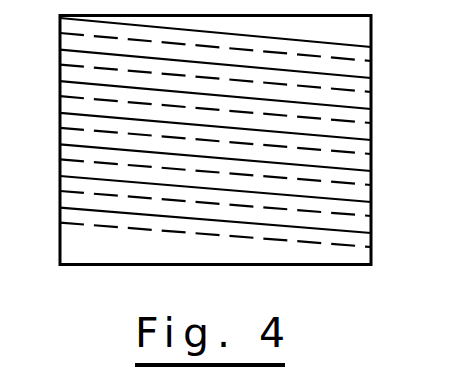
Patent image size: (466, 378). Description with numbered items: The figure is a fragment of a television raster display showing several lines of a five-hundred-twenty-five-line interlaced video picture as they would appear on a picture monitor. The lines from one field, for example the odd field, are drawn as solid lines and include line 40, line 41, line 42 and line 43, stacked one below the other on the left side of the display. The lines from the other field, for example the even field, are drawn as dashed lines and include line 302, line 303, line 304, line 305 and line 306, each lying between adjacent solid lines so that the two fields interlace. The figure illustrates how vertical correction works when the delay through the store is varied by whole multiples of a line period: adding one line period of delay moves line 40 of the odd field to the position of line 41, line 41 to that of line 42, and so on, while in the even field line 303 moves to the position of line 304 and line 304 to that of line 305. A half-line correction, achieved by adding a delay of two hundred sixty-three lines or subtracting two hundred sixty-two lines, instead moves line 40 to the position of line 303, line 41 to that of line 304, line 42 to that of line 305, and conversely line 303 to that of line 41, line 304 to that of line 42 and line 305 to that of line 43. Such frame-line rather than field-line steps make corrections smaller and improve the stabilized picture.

The line 40 is at (70, 83).
The line 41 is at (70, 115).
The line 42 is at (70, 147).
The line 43 is at (70, 178).
The dashed line 302 is at (332, 90).
The line 303 is at (332, 122).
The line 304 is at (332, 153).
The line 305 is at (332, 184).
The dashed line 306 is at (332, 216).